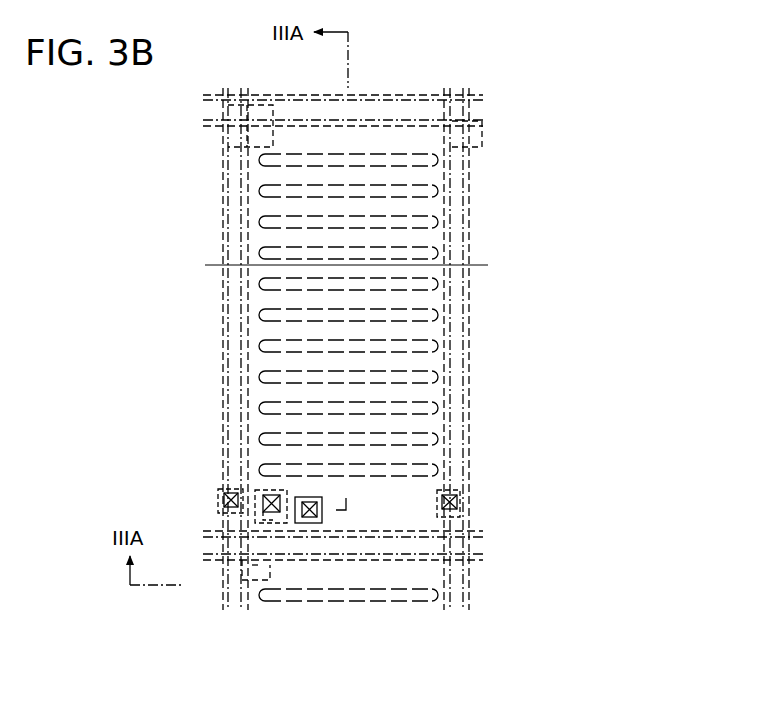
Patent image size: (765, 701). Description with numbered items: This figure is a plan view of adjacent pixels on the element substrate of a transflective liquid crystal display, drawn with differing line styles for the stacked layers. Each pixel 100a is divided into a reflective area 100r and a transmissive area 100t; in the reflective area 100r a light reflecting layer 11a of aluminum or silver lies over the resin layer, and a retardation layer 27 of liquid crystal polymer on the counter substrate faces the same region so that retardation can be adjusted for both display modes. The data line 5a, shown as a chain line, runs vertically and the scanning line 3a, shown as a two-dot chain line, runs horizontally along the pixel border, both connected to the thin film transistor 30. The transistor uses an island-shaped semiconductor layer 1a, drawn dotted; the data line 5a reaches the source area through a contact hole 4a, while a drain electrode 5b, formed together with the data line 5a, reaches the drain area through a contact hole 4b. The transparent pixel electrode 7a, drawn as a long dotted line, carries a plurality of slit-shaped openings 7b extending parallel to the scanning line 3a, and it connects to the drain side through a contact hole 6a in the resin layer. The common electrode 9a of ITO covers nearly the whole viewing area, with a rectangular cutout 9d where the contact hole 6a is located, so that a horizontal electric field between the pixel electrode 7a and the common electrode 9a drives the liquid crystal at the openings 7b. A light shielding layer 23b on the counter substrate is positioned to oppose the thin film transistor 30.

The data line 5a is at (250, 89).
The scanning line 3a is at (202, 95).
The common electrode 9a is at (243, 220).
The pixel electrode 7a is at (248, 317).
The openings 7b is at (232, 328).
The contact hole 4a is at (223, 492).
The contact hole 4b is at (270, 498).
The contact hole 6a is at (308, 523).
The cutout 9d is at (323, 513).
The drain electrode 5b is at (322, 512).
The thin film transistor 30 is at (291, 548).
The semiconductor layer 1a is at (250, 590).
The reflective area 100r is at (496, 125).
The retardation layer 27 is at (496, 265).
The light reflecting layer 11a is at (496, 265).
The transmissive area 100t is at (496, 267).
The pixel 100a is at (630, 130).
The light shielding layer 23b is at (496, 474).